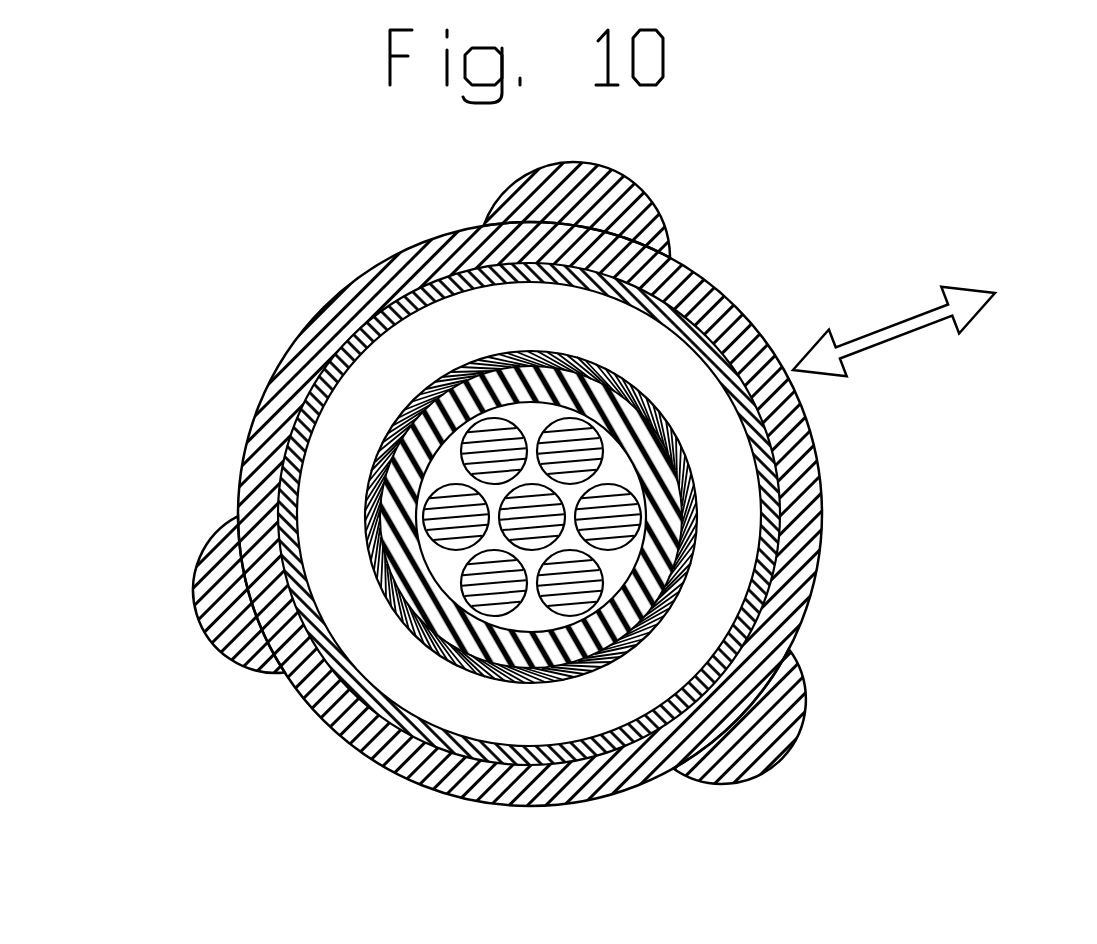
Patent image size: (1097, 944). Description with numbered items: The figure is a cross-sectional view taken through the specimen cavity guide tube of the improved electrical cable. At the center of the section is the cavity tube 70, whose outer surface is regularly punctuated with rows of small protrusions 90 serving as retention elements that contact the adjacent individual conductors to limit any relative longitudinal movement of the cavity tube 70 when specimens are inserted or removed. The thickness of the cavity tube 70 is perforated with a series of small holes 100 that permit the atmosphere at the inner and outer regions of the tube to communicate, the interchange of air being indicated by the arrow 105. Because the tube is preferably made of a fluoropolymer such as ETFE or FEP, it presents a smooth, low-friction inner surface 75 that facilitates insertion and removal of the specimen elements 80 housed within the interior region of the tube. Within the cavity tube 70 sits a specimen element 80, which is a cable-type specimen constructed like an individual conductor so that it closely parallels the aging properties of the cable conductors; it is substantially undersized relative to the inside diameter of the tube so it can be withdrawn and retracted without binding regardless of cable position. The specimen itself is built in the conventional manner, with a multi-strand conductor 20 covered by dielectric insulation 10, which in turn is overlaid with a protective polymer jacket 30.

The holes 100 is at (317, 284).
The cavity tube 70 is at (823, 502).
The protrusions 90 is at (653, 208).
The inner surface 75 is at (340, 737).
The dielectric insulation 10 is at (502, 378).
The protective polymer jacket 30 is at (687, 565).
The conductor 20 is at (430, 497).
The specimen elements 80 is at (565, 708).
The arrow 105 is at (923, 323).